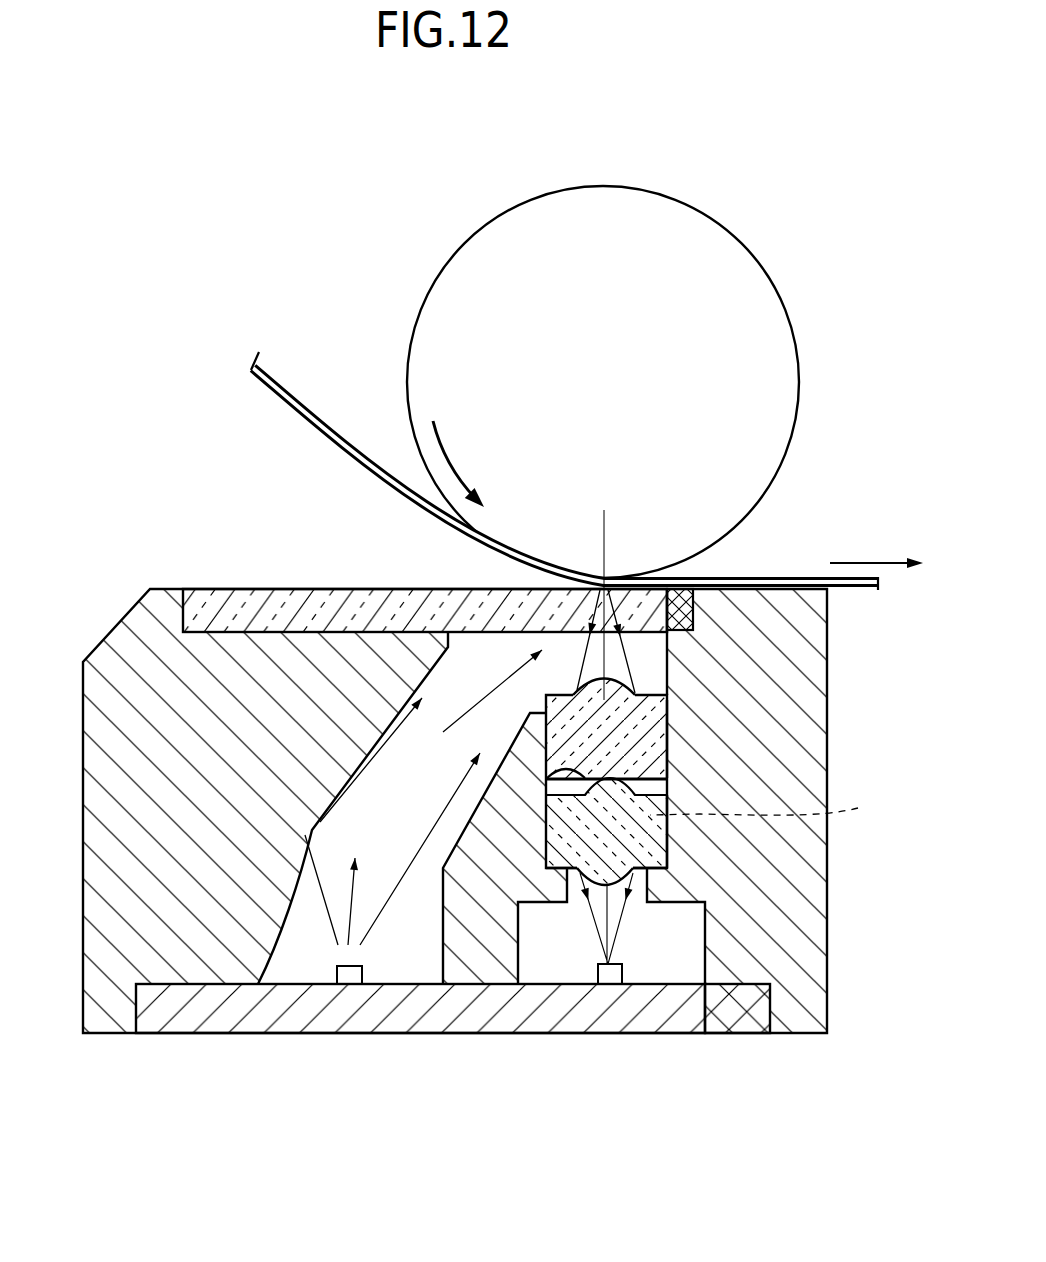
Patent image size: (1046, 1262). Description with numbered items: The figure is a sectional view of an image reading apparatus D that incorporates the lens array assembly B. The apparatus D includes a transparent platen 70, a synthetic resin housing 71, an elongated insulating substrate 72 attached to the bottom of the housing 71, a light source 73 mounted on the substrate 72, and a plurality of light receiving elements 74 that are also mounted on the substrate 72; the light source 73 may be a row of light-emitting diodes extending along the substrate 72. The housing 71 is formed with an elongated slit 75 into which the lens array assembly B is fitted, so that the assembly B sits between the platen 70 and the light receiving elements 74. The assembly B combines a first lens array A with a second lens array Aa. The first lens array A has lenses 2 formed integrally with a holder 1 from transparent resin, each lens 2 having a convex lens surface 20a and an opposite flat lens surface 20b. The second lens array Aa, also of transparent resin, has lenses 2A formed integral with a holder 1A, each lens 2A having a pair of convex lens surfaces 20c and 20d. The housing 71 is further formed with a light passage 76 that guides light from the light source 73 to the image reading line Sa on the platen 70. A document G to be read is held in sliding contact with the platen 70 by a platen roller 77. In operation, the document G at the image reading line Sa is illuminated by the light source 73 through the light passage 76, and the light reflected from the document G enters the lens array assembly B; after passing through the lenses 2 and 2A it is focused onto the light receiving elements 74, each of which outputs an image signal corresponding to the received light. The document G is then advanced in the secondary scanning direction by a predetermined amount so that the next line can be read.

The image reading apparatus D is at (140, 404).
The document G is at (323, 427).
The platen roller 77 is at (779, 396).
The transparent platen 70 is at (343, 590).
The housing 71 is at (132, 657).
The insulating substrate 72 is at (483, 1007).
The light source 73 is at (355, 972).
The light receiving elements 74 is at (623, 973).
The slit 75 is at (783, 797).
The light passage 76 is at (423, 797).
The image reading line Sa is at (606, 578).
The holder 1 is at (637, 697).
The lens 2 is at (615, 722).
The holder 1A is at (660, 862).
The lens 2A is at (665, 852).
The lens array A is at (680, 753).
The lens array assembly B is at (680, 733).
The second lens array Aa is at (680, 838).
The convex lens surface 20a is at (615, 683).
The flat lens surface 20b is at (645, 805).
The convex lens surface 20c is at (560, 775).
The convex lens surface 20d is at (595, 895).